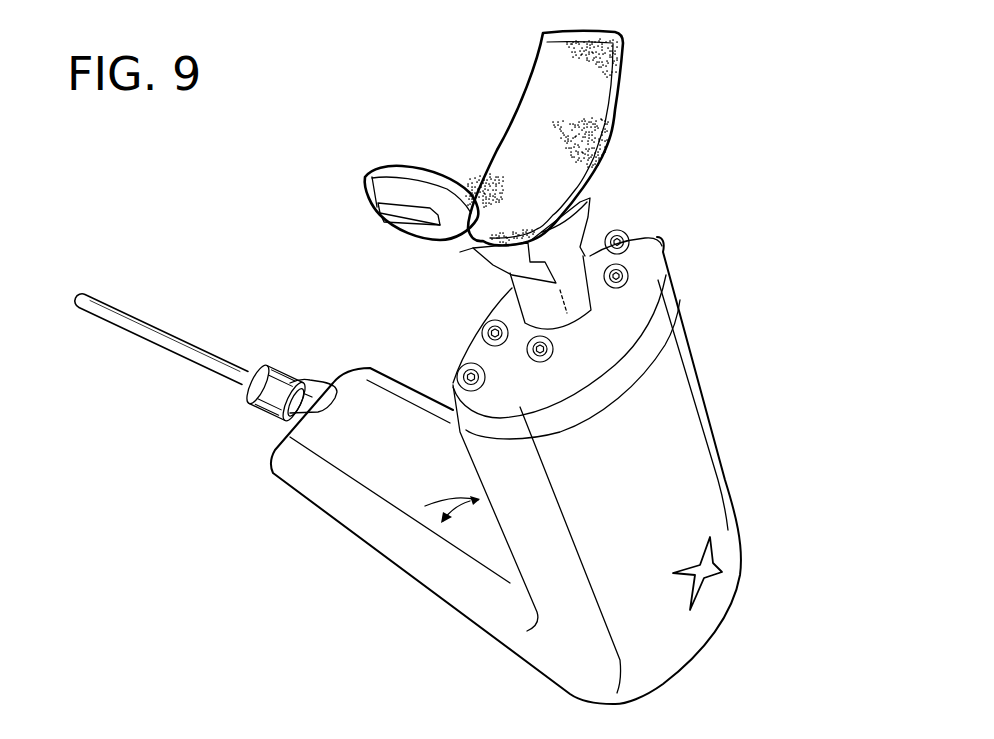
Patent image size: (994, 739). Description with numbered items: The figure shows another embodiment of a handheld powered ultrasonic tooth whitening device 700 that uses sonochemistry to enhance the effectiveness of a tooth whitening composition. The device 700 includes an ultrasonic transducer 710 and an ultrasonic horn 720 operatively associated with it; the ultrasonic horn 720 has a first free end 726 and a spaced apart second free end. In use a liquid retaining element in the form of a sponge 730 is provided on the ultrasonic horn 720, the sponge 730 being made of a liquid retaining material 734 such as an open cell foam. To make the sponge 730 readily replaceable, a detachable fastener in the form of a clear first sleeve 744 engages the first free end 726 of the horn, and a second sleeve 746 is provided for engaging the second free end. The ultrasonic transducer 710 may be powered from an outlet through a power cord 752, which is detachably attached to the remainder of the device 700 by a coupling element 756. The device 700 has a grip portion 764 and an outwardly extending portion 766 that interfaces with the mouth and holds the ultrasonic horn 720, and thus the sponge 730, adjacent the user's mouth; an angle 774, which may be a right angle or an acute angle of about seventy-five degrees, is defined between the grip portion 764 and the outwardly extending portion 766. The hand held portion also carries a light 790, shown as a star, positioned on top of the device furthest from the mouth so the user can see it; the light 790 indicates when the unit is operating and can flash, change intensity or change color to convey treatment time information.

The ultrasonic tooth whitening device 700 is at (705, 277).
The ultrasonic transducer 710 is at (588, 275).
The ultrasonic horn 720 is at (455, 254).
The first free end 726 is at (373, 172).
The sponge 730 is at (622, 118).
The liquid retaining material 734 is at (600, 158).
The first sleeve 744 is at (430, 240).
The second sleeve 746 is at (623, 65).
The power cord 752 is at (132, 330).
The coupling element 756 is at (278, 370).
The grip portion 764 is at (438, 573).
The outwardly extending portion 766 is at (682, 438).
The angle 774 is at (425, 506).
The light 790 is at (700, 572).